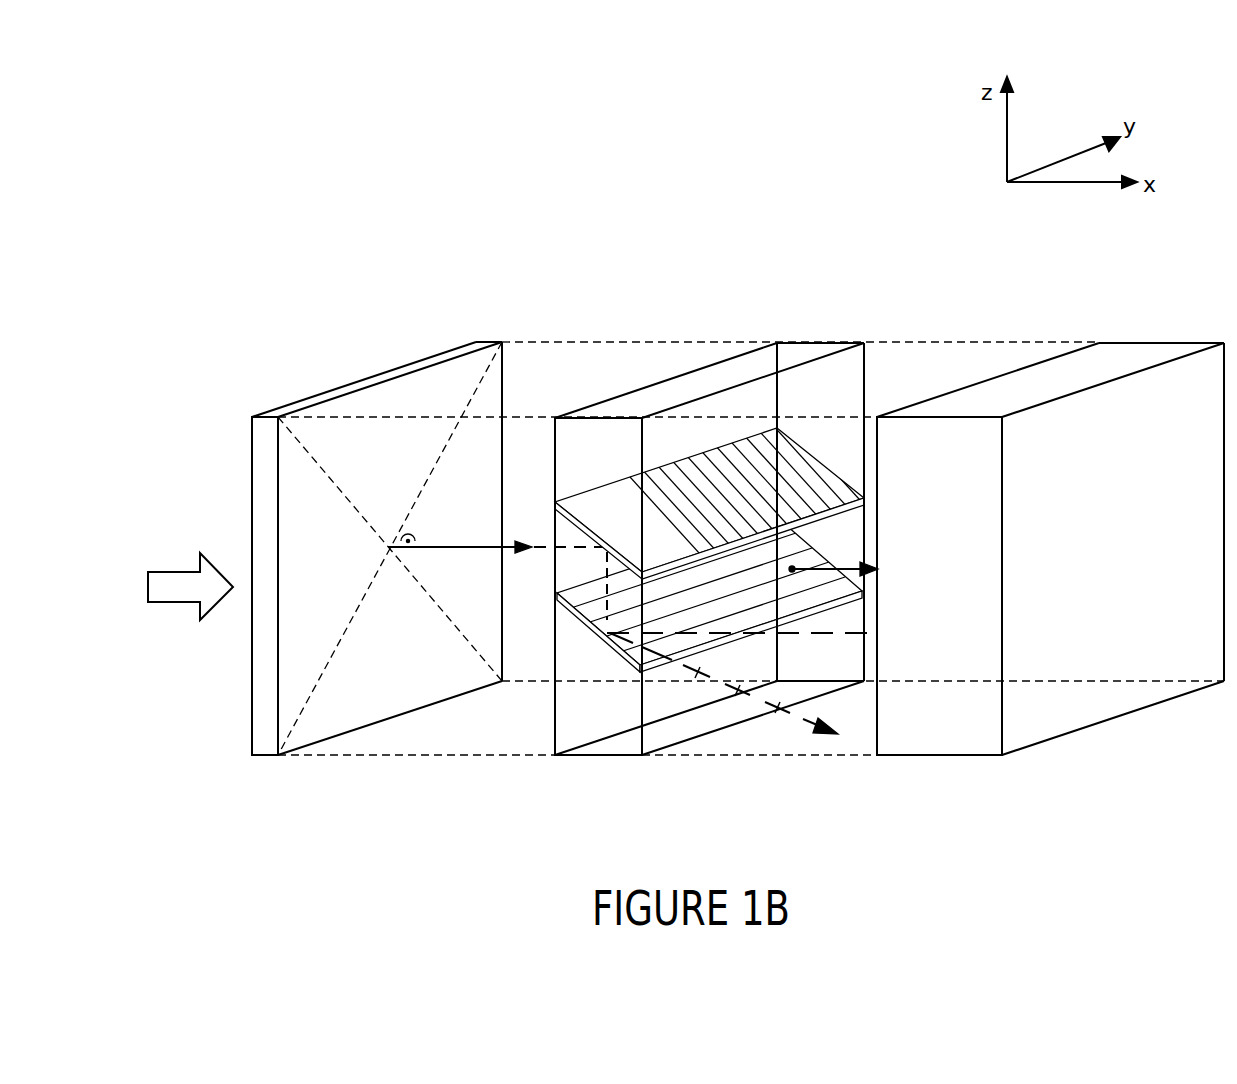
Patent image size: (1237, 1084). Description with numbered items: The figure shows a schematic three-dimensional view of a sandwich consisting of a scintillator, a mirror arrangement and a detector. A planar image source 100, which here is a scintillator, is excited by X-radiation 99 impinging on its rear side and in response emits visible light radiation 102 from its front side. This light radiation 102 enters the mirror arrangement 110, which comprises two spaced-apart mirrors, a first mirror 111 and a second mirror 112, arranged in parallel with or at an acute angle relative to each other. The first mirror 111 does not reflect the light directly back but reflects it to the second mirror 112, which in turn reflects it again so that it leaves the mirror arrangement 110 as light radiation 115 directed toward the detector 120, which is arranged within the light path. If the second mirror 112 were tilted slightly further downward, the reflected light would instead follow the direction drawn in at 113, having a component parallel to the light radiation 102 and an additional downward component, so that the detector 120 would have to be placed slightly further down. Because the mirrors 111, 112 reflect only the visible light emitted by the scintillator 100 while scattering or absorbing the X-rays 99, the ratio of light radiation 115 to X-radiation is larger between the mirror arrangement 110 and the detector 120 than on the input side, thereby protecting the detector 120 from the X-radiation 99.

The X-radiation 99 is at (178, 562).
The planar image source 100 is at (378, 376).
The light radiation 102 is at (478, 540).
The mirror arrangement 110 is at (742, 459).
The first mirror 111 is at (833, 467).
The second mirror 112 is at (583, 625).
The radiation 113 is at (800, 740).
The light radiation 115 is at (848, 567).
The detector 120 is at (1130, 340).